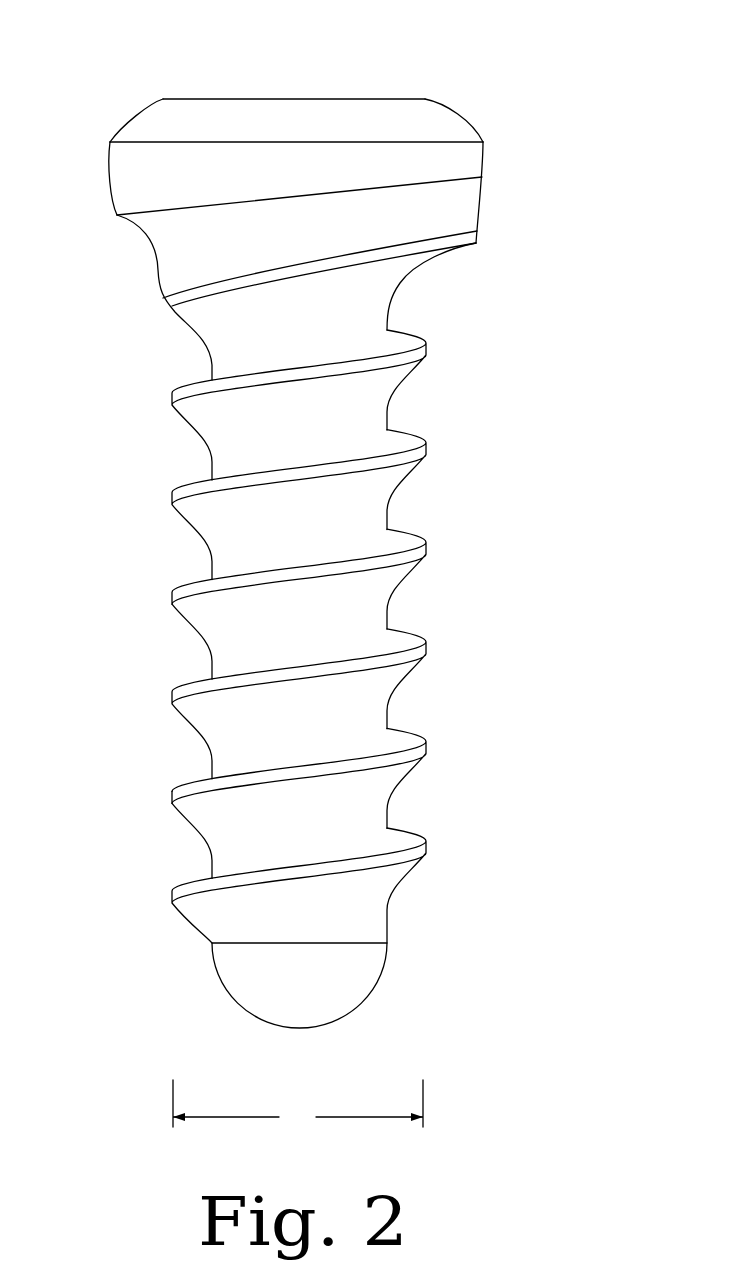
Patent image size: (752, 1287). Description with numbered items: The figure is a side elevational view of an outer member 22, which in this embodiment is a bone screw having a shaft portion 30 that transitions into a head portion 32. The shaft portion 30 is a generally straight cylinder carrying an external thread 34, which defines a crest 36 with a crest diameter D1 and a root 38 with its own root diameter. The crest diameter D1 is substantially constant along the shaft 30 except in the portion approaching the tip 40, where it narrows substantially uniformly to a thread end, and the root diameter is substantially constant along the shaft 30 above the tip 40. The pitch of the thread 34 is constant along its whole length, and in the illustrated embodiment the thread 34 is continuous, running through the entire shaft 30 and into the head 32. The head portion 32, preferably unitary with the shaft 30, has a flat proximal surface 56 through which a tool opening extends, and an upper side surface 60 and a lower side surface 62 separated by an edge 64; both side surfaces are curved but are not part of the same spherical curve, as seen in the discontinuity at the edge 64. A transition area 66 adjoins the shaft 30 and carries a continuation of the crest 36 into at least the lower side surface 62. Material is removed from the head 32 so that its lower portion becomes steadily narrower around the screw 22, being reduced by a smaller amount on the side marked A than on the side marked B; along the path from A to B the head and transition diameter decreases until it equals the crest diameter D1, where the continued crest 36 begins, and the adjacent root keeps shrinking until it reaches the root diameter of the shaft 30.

The outer member 22 is at (321, 196).
The shaft portion 30 is at (315, 636).
The head portion 32 is at (100, 138).
The external thread 34 is at (428, 745).
The crest 36 is at (176, 798).
The root 38 is at (212, 653).
The tip 40 is at (320, 1023).
The flat proximal surface 56 is at (383, 99).
The upper side surface 60 is at (175, 113).
The lower side surface 62 is at (124, 201).
The edge 64 is at (105, 162).
The transition area 66 is at (504, 217).
The side of smaller head reduction A is at (498, 192).
The side of larger head reduction B is at (147, 268).
The crest diameter D1 is at (298, 1107).